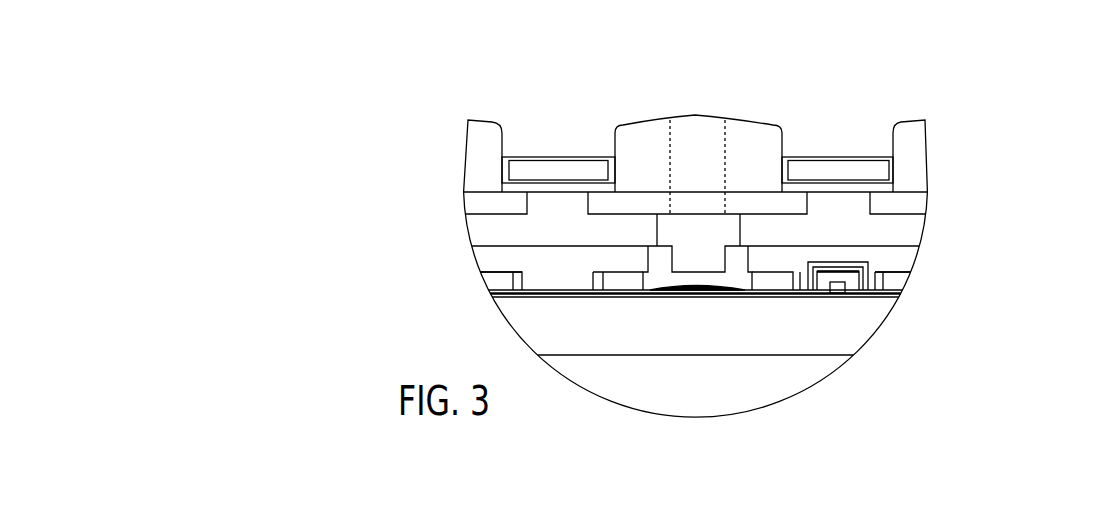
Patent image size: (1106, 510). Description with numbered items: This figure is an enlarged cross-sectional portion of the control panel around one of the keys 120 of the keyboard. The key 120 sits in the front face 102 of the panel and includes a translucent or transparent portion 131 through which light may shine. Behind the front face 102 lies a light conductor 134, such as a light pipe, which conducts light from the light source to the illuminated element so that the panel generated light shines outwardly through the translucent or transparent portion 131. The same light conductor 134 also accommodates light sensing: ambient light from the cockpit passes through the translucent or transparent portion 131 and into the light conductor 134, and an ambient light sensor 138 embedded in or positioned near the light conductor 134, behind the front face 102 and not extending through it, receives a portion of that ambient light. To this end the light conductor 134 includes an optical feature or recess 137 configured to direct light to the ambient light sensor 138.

The key 120 is at (726, 239).
The front face 102 is at (838, 156).
The translucent or transparent portion 131 is at (697, 114).
The light conductor 134 is at (502, 258).
The optical feature or recess 137 is at (855, 263).
The ambient light sensor 138 is at (853, 298).